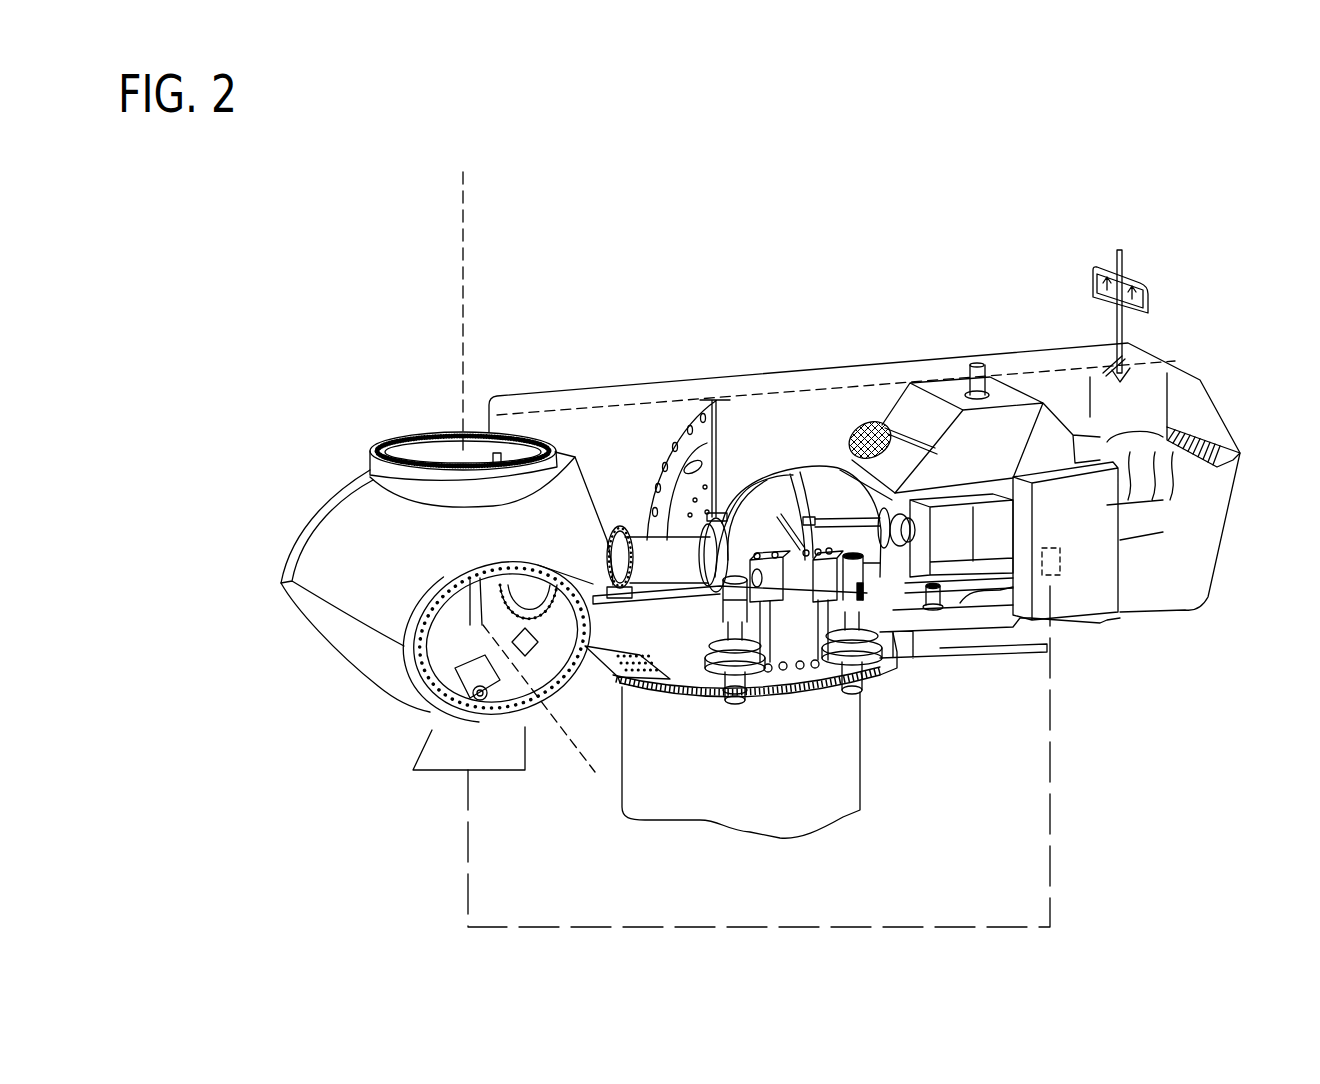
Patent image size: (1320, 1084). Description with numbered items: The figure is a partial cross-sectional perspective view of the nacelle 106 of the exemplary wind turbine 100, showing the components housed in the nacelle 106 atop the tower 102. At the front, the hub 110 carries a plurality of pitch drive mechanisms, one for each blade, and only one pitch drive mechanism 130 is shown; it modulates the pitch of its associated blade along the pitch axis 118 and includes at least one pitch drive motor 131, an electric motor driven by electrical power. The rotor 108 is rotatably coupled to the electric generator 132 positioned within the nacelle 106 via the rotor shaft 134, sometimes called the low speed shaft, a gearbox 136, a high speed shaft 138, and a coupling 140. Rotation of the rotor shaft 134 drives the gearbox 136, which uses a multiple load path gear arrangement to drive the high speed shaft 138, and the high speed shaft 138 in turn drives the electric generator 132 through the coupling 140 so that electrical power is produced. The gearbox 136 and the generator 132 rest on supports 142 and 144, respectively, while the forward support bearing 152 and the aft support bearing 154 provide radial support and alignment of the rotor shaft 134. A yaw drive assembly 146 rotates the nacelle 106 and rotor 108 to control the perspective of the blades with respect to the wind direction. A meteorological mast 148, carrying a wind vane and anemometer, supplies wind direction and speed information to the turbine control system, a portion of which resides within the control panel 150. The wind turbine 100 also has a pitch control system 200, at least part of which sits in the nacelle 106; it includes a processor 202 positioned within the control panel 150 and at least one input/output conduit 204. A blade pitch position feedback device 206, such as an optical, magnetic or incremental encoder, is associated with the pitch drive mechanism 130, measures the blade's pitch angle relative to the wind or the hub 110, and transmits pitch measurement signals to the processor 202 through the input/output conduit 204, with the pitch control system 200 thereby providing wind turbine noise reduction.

The wind turbine 100 is at (342, 293).
The tower 102 is at (790, 822).
The nacelle 106 is at (633, 305).
The rotor 108 is at (270, 568).
The hub 110 is at (368, 472).
The pitch axis 118 is at (466, 180).
The pitch drive mechanism 130 is at (433, 714).
The pitch drive motor 131 is at (437, 640).
The electric generator 132 is at (958, 545).
The rotor shaft 134 is at (626, 537).
The gearbox 136 is at (797, 520).
The high speed shaft 138 is at (880, 560).
The coupling 140 is at (910, 496).
The support 142 is at (840, 692).
The support 144 is at (882, 588).
The yaw drive assembly 146 is at (733, 680).
The meteorological mast 148 is at (1150, 292).
The control panel 150 is at (1103, 577).
The forward support bearing 152 is at (628, 520).
The aft support bearing 154 is at (735, 525).
The pitch control system 200 is at (1110, 768).
The processor 202 is at (1060, 553).
The input/output conduit 204 is at (1052, 875).
The blade pitch position feedback device 206 is at (620, 665).